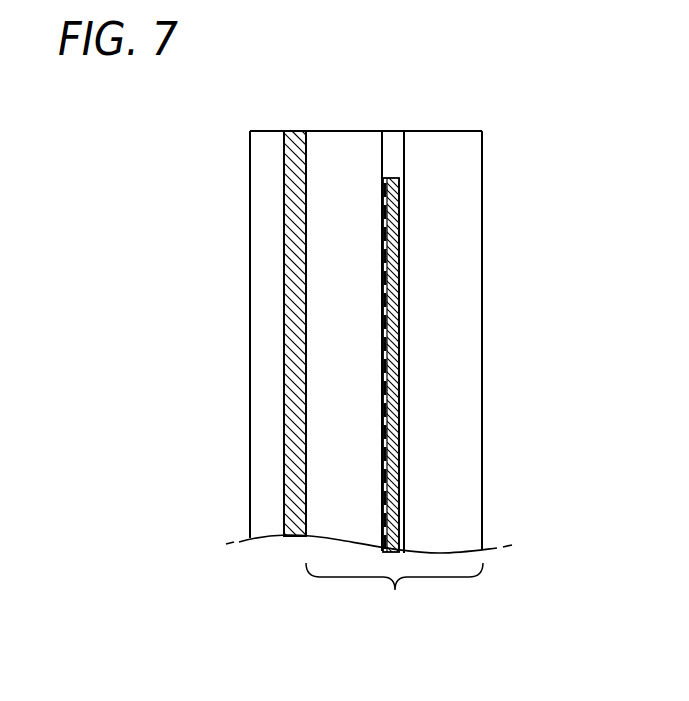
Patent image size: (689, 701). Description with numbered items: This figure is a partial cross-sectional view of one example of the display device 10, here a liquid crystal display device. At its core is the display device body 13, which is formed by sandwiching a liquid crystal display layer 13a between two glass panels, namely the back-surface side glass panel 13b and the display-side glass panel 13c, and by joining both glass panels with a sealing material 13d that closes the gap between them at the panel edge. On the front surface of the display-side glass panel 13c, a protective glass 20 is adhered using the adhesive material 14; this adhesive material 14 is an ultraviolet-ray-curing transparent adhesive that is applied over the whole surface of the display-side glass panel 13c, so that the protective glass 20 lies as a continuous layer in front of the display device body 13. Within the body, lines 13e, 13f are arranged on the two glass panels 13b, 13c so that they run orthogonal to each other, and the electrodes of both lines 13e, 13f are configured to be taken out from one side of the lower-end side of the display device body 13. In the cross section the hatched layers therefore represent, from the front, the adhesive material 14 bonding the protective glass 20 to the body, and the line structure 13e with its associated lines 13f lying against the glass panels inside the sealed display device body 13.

The display device 10 is at (465, 113).
The display device body 13 is at (394, 590).
The liquid crystal display layer 13a is at (400, 202).
The back-surface side glass panel 13b is at (460, 318).
The display-side glass panel 13c is at (333, 357).
The sealing material 13d is at (393, 140).
The lines 13e is at (405, 414).
The lines 13f is at (383, 457).
The adhesive material 14 is at (290, 131).
The protective glass 20 is at (268, 208).